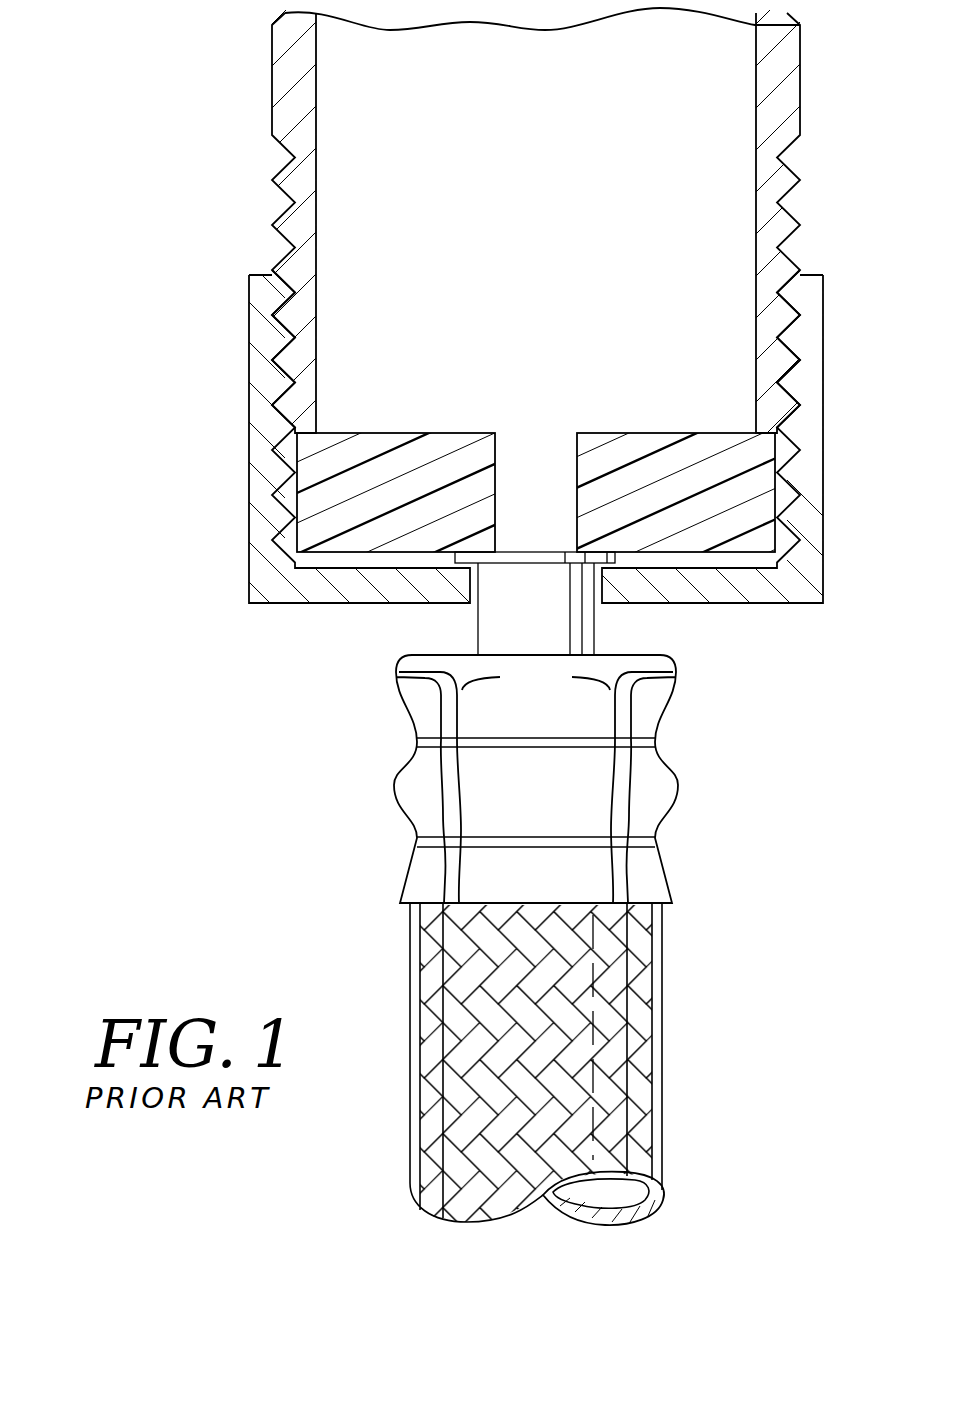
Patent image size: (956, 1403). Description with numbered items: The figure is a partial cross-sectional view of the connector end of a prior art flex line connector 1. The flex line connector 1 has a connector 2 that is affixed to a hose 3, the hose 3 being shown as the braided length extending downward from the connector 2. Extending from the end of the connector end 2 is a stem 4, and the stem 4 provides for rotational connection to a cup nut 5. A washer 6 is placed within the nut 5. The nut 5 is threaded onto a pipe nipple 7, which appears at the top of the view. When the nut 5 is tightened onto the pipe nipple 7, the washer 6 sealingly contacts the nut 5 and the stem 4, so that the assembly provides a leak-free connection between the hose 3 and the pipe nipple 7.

The flex line connector 1 is at (212, 248).
The connector 2 is at (600, 792).
The hose 3 is at (600, 1000).
The stem 4 is at (510, 610).
The cup nut 5 is at (267, 525).
The washer 6 is at (421, 455).
The pipe nipple 7 is at (270, 60).